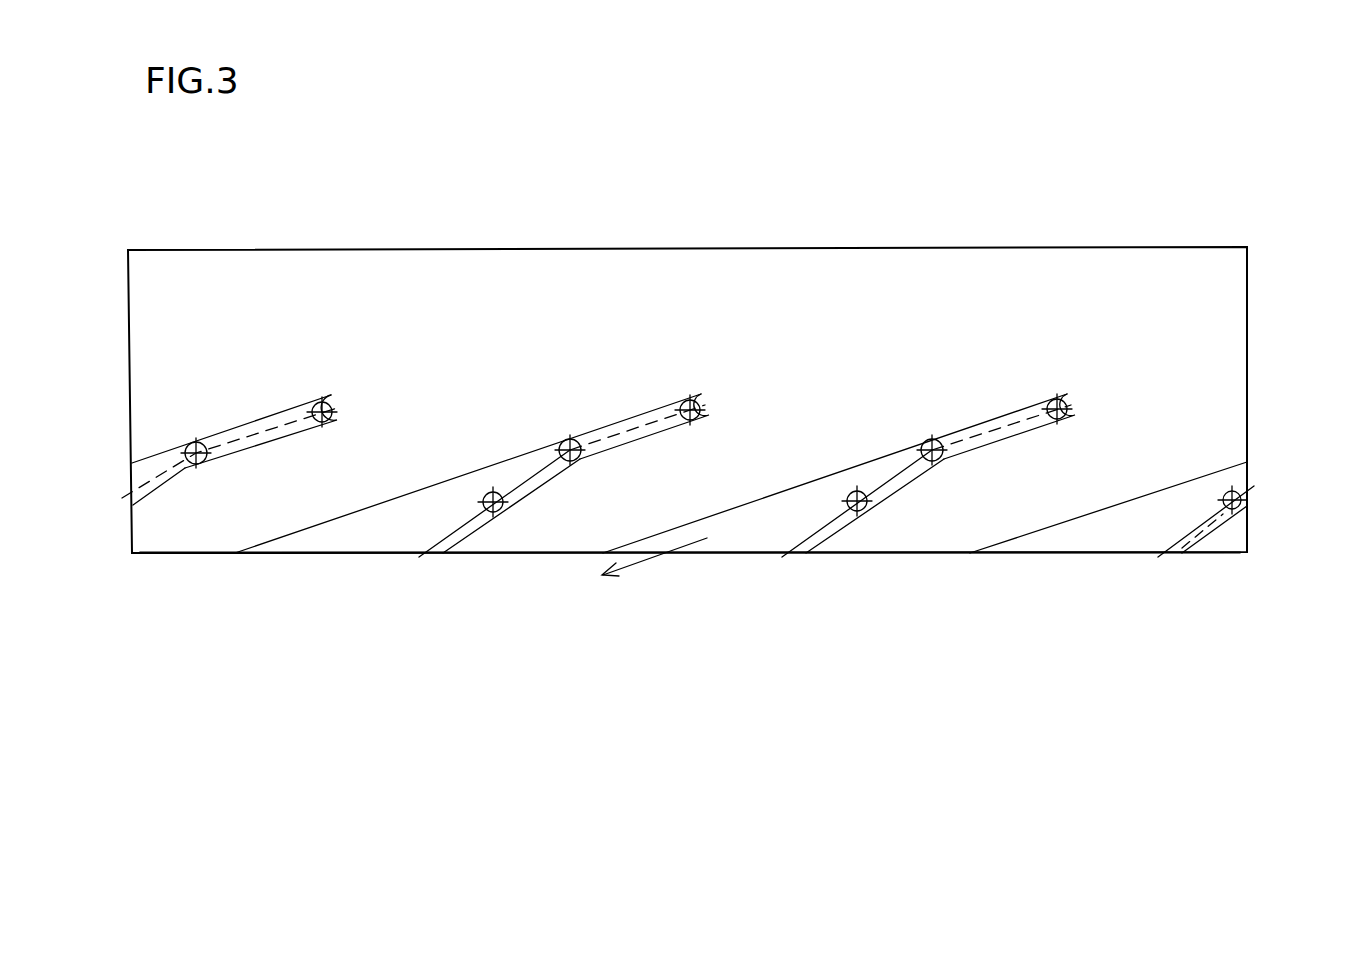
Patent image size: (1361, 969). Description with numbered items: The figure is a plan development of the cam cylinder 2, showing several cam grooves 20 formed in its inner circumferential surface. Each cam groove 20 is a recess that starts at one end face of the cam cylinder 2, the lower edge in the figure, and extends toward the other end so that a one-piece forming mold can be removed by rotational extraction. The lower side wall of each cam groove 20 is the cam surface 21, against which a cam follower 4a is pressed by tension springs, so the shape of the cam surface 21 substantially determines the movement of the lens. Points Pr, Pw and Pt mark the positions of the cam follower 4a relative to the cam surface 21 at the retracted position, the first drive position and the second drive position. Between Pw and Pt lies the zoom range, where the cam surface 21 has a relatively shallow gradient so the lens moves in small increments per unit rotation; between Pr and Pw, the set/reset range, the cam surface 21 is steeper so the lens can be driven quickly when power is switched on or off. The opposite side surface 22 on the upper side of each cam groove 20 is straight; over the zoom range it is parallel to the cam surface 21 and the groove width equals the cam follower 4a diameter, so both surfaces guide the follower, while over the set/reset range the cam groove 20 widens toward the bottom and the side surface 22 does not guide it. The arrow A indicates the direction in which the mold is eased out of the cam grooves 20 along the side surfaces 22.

The cam cylinder 2 is at (1247, 308).
The cam groove 20 is at (372, 553).
The cam surface 21 is at (460, 537).
The opposite side surface 22 is at (404, 507).
The cam follower 4a is at (504, 506).
The retracted position Pr is at (492, 491).
The first drive position Pw is at (188, 442).
The second drive position Pt is at (320, 401).
The mold extraction direction arrow A is at (654, 569).